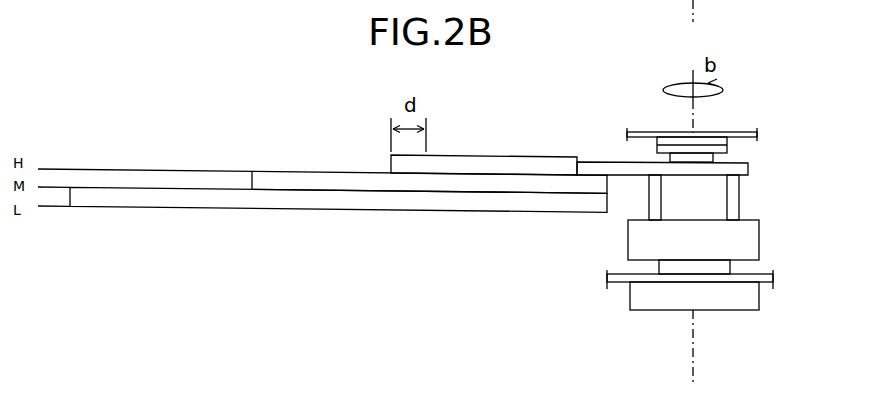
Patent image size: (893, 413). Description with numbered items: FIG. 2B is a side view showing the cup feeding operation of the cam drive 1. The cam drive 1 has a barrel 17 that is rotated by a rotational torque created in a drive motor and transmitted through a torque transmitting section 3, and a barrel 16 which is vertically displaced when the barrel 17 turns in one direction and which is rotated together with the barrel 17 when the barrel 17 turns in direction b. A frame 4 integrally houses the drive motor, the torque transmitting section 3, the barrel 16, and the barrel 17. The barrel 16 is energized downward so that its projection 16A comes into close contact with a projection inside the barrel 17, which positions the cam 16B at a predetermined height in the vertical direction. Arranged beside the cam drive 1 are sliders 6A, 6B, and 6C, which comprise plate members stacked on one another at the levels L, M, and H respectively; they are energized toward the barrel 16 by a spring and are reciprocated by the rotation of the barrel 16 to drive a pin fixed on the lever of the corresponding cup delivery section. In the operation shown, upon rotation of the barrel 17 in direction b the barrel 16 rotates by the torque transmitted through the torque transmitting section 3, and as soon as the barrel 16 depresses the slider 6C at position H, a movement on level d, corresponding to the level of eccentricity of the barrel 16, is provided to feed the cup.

The cam drive 1 is at (768, 245).
The torque transmitting section 3 is at (742, 297).
The frame 4 is at (740, 132).
The slider 6A is at (145, 195).
The slider 6B is at (315, 178).
The slider 6C is at (511, 165).
The barrel 16 is at (663, 185).
The projection 16A is at (735, 203).
The cam 16B is at (603, 162).
The barrel 17 is at (636, 238).